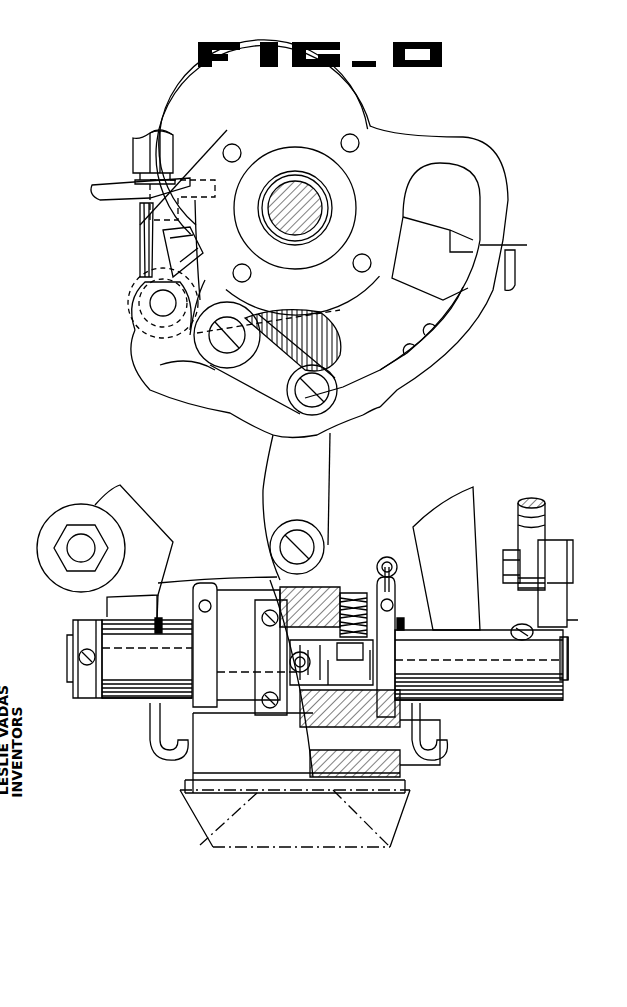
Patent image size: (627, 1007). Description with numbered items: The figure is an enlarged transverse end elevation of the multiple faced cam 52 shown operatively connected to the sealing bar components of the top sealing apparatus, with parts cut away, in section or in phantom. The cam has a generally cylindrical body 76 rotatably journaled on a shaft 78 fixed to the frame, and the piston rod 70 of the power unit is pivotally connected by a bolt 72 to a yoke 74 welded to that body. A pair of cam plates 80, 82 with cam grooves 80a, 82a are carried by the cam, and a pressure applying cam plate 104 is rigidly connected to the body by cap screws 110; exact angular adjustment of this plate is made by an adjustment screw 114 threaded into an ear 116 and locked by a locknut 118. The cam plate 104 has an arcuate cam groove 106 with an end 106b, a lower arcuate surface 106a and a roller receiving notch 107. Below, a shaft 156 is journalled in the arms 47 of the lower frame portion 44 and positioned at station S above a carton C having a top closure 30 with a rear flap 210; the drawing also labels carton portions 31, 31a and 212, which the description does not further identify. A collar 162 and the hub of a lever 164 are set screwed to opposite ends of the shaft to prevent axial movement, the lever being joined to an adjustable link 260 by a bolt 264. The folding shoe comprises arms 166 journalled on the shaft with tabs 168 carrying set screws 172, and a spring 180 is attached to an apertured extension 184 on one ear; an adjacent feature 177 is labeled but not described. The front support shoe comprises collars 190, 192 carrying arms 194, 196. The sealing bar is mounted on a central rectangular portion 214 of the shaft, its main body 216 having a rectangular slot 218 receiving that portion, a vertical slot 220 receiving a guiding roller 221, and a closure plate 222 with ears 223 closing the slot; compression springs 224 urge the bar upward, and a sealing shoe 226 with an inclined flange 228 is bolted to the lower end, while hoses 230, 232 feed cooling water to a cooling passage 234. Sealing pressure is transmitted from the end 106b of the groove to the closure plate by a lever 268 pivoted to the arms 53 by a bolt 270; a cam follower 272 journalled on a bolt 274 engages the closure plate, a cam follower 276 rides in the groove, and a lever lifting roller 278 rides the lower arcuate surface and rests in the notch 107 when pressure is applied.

The top closure 30 is at (388, 840).
The nozzle tip 31 is at (185, 803).
The nozzle inner cone 31a is at (412, 805).
The lower frame portion 44 is at (135, 500).
The arms 47 is at (125, 700).
The multiple faced cam 52 is at (368, 115).
The arms 53 is at (58, 520).
The piston rod 70 is at (132, 150).
The bolt 72 is at (150, 300).
The yoke 74 is at (140, 318).
The cylindrical body 76 is at (272, 108).
The shaft 78 is at (310, 205).
The cam plate 80 is at (132, 352).
The cam groove 80a is at (162, 365).
The cam plate 82 is at (512, 270).
The cam groove 82a is at (510, 243).
The pressure applying cam plate 104 is at (420, 140).
The arcuate cam groove 106 is at (445, 348).
The lower arcuate surface 106a is at (432, 368).
The end of the groove 106b is at (200, 372).
The roller receiving notch 107 is at (268, 432).
The cap screws 110 is at (344, 143).
The adjustment screw 114 is at (140, 272).
The ear 116 is at (128, 215).
The locknut 118 is at (140, 255).
The shaft 156 is at (70, 650).
The collar 162 is at (87, 618).
The lever 164 is at (572, 625).
The arms 166 is at (192, 638).
The tabs 168 is at (218, 592).
The set screws 172 is at (157, 604).
The pin hole 177 is at (395, 607).
The spring 180 is at (398, 567).
The apertured extension 184 is at (405, 582).
The collar 190 is at (170, 653).
The collar 192 is at (415, 658).
The arm 194 is at (175, 748).
The arm 196 is at (422, 765).
The rear flap 210 is at (611, 493).
The rack guide 212 is at (612, 451).
The central rectangular portion 214 is at (331, 662).
The main body 216 is at (195, 765).
The rectangular slot 218 is at (313, 715).
The vertical slot 220 is at (262, 705).
The roller 221 is at (275, 673).
The closure plate 222 is at (243, 592).
The ears 223 is at (188, 622).
The compression springs 224 is at (362, 600).
The sealing shoe 226 is at (405, 778).
The inclined flange 228 is at (185, 785).
The hose 230 is at (148, 720).
The hose 232 is at (450, 730).
The cooling passage 234 is at (305, 745).
The adjustable link 260 is at (531, 503).
The bolt 264 is at (503, 552).
The lever 268 is at (332, 462).
The bolt 270 is at (82, 540).
The cam follower 272 is at (322, 540).
The bolt 274 is at (312, 552).
The cam follower 276 is at (218, 357).
The lever lifting roller 278 is at (366, 420).
The station S is at (520, 781).
The carton C is at (215, 830).